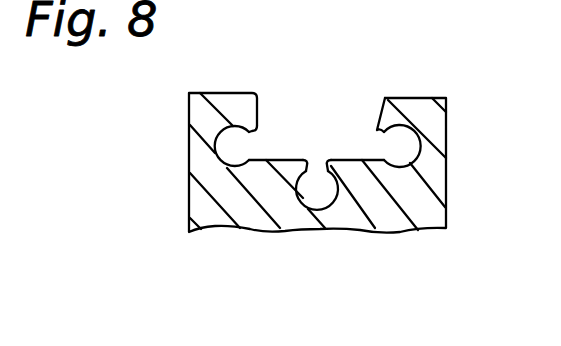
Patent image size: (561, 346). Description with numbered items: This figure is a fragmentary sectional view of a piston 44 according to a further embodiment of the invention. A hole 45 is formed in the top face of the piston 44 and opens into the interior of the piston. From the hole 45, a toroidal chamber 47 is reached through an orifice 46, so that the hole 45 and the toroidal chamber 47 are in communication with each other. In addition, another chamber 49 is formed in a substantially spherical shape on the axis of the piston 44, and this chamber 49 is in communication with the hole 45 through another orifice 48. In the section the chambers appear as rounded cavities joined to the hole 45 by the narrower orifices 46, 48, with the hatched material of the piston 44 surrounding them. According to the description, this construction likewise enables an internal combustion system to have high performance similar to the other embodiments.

The piston 44 is at (418, 202).
The hole 45 is at (357, 127).
The orifice 46 is at (372, 160).
The toroidal chamber 47 is at (405, 146).
The orifice 48 is at (313, 164).
The chamber 49 is at (313, 198).